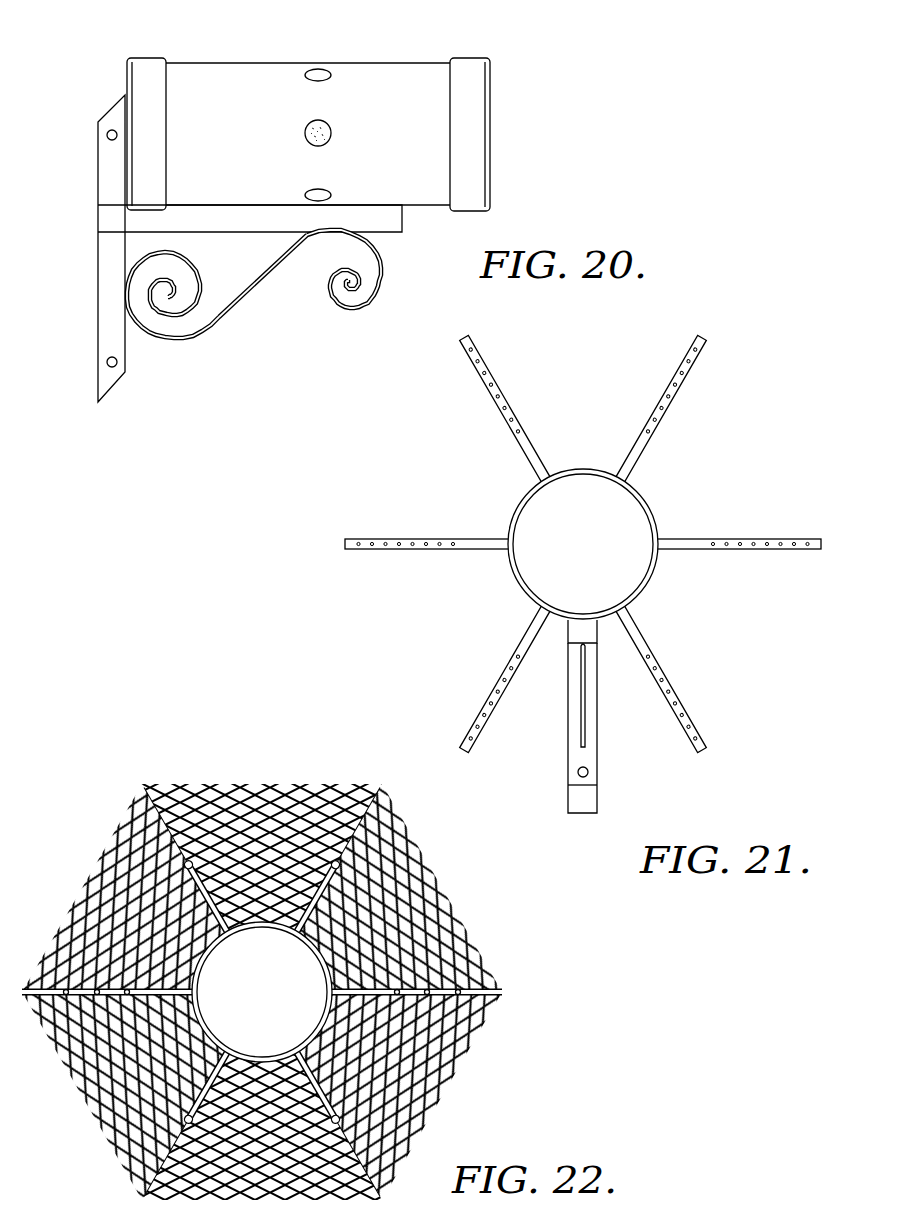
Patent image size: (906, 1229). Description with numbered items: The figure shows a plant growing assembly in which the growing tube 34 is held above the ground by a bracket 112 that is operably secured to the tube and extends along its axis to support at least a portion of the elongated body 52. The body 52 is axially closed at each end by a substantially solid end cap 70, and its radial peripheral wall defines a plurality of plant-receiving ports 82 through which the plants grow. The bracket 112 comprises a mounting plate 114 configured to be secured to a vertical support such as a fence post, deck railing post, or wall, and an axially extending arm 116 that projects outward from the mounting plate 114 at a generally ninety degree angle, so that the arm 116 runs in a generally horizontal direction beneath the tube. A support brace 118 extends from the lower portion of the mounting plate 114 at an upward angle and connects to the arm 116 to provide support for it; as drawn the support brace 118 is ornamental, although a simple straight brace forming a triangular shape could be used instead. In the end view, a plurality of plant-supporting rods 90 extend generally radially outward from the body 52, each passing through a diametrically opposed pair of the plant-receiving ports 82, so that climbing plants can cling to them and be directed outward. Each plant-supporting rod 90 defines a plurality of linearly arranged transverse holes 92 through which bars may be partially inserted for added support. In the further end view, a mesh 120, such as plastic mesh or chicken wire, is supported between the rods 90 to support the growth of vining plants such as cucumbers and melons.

In FIG. 20, the growing tube 34 is at (304, 112).
In FIG. 21, the growing tube 34 is at (583, 574).
In FIG. 20, the elongated body 52 is at (259, 84).
In FIG. 20, the end cap 70 is at (140, 83).
In FIG. 21, the end cap 70 is at (633, 513).
In FIG. 22, the end cap 70 is at (313, 975).
In FIG. 20, the plant-receiving port 82 is at (331, 77).
In FIG. 21, the plant-supporting rod 90 is at (693, 362).
In FIG. 22, the plant-supporting rod 90 is at (340, 785).
In FIG. 21, the transverse hole 92 is at (668, 398).
In FIG. 20, the bracket 112 is at (241, 248).
In FIG. 20, the mounting plate 114 is at (100, 320).
In FIG. 21, the mounting plate 114 is at (592, 757).
In FIG. 20, the arm 116 is at (389, 237).
In FIG. 21, the arm 116 is at (568, 632).
In FIG. 20, the support brace 118 is at (217, 320).
In FIG. 21, the support brace 118 is at (578, 701).
In FIG. 22, the mesh 120 is at (423, 1060).